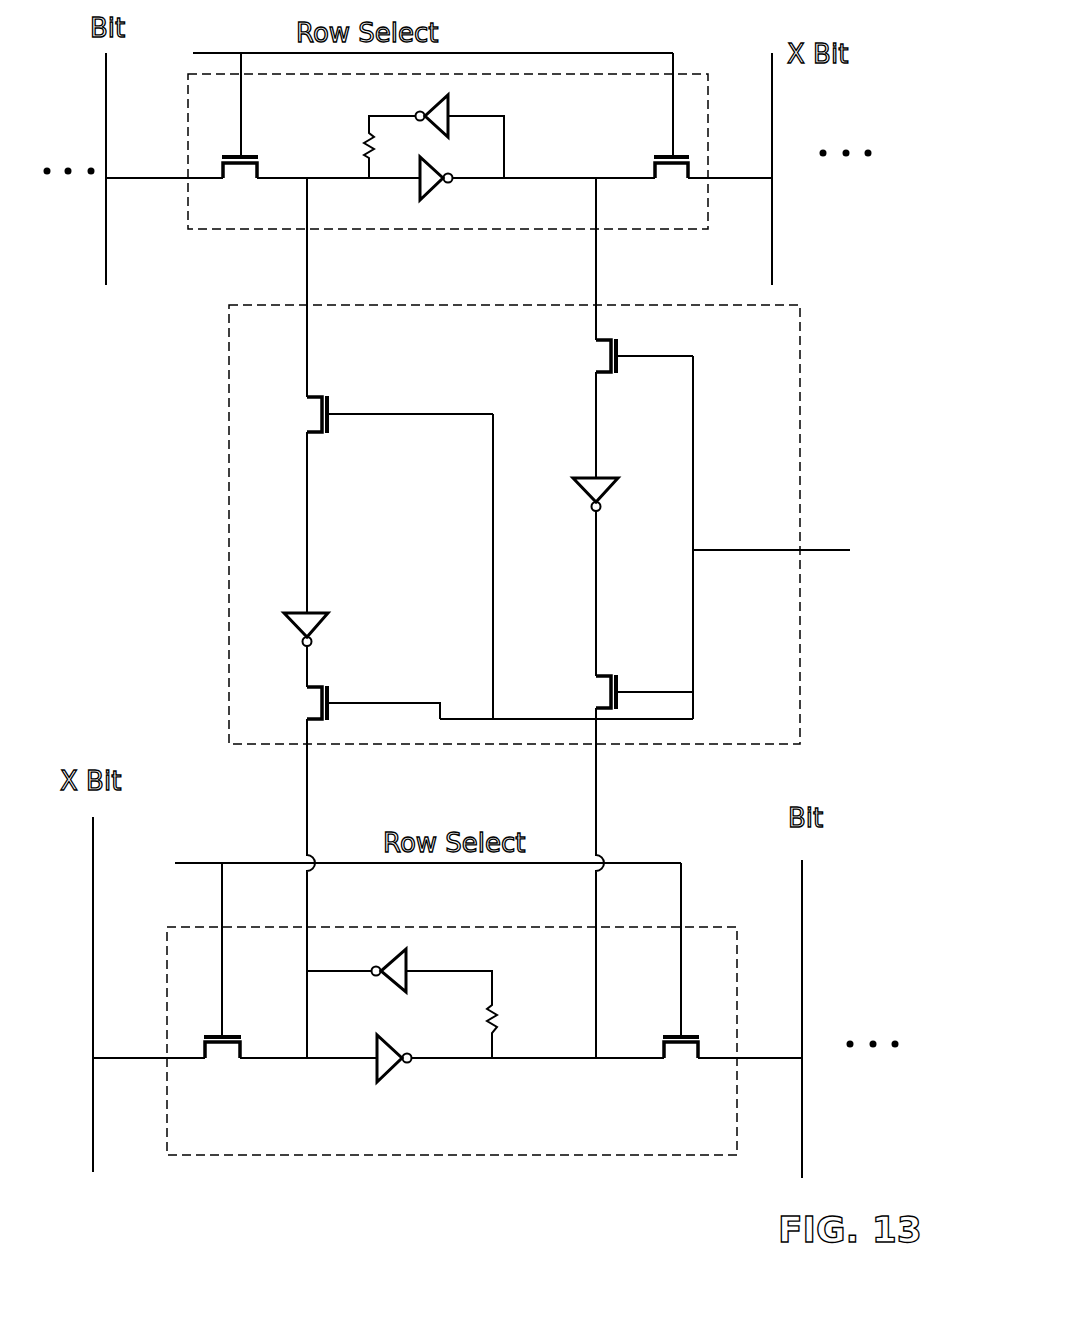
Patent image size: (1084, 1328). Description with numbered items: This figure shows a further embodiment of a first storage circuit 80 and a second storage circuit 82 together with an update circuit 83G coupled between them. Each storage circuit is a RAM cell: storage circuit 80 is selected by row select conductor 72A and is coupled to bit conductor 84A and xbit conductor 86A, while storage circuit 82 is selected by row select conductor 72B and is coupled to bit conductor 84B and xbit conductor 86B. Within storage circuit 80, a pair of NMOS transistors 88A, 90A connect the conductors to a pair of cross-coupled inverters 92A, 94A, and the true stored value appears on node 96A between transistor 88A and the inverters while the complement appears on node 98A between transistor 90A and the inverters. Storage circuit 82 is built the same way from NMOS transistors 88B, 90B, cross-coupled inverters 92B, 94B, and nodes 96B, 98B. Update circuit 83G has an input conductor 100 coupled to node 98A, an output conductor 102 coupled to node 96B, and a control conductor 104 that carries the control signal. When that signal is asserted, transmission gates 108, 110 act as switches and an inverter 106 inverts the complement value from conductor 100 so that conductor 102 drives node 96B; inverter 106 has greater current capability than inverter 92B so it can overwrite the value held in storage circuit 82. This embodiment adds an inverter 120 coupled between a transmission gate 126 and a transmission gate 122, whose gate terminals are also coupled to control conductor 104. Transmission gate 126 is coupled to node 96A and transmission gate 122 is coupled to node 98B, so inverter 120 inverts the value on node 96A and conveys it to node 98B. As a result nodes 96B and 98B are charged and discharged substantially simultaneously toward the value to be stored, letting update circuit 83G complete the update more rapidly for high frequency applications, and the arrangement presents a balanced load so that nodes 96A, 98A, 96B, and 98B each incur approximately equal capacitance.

The row select conductor 72A is at (603, 53).
The row select conductor 72B is at (681, 896).
The first storage circuit 80 is at (295, 231).
The second storage circuit 82 is at (318, 1157).
The update circuit 83G is at (835, 738).
The bit conductor 84A is at (106, 225).
The bit conductor 84B is at (802, 950).
The xbit conductor 86A is at (772, 245).
The xbit conductor 86B is at (93, 977).
The NMOS transistor 88A is at (258, 167).
The NMOS transistor 88B is at (662, 1048).
The NMOS transistor 90A is at (655, 167).
The NMOS transistor 90B is at (240, 1045).
The inverter 92A is at (452, 108).
The inverter 92B is at (396, 1068).
The inverter 94A is at (422, 188).
The inverter 94B is at (405, 965).
The node 96A is at (295, 181).
The node 96B is at (545, 1062).
The node 98A is at (556, 182).
The node 98B is at (265, 1063).
The input conductor 100 is at (596, 258).
The output conductor 102 is at (596, 830).
The control conductor 104 is at (816, 550).
The inverter 106 is at (582, 478).
The transmission gate 108 is at (618, 367).
The transmission gate 110 is at (615, 682).
The inverter 120 is at (320, 628).
The transmission gate 122 is at (313, 697).
The transmission gate 126 is at (315, 435).